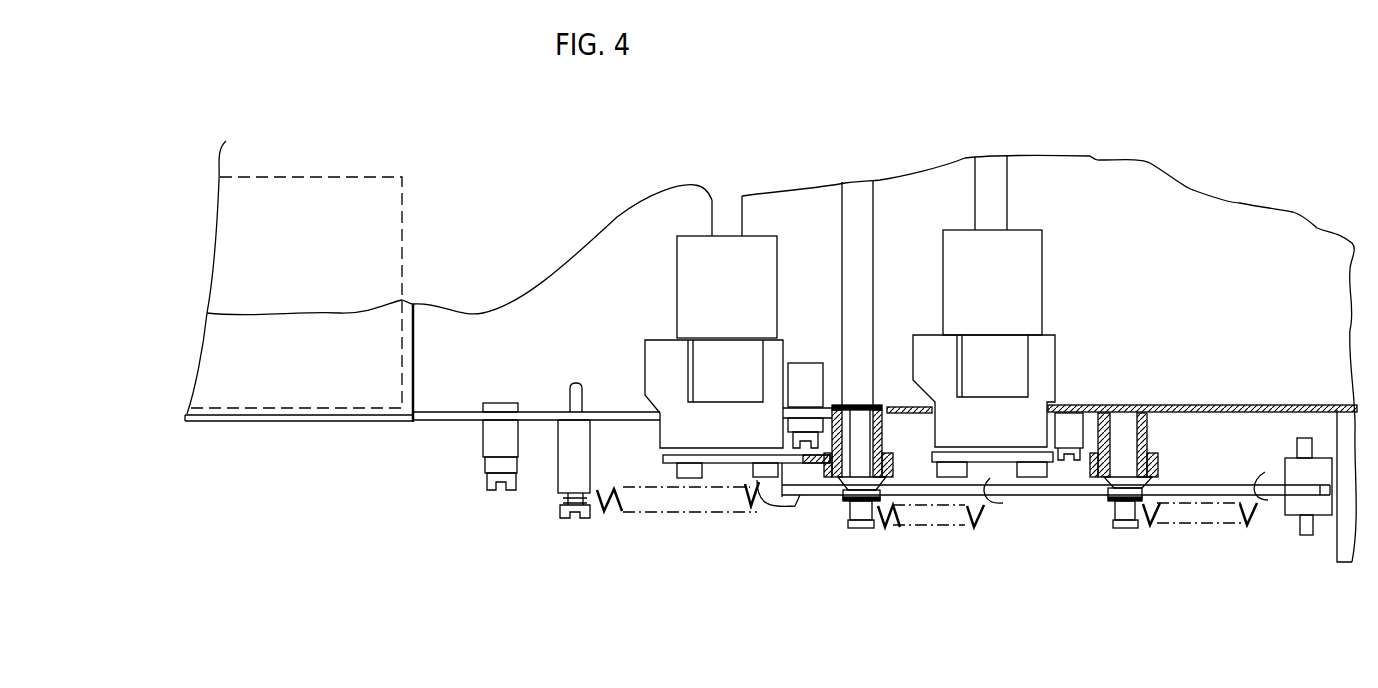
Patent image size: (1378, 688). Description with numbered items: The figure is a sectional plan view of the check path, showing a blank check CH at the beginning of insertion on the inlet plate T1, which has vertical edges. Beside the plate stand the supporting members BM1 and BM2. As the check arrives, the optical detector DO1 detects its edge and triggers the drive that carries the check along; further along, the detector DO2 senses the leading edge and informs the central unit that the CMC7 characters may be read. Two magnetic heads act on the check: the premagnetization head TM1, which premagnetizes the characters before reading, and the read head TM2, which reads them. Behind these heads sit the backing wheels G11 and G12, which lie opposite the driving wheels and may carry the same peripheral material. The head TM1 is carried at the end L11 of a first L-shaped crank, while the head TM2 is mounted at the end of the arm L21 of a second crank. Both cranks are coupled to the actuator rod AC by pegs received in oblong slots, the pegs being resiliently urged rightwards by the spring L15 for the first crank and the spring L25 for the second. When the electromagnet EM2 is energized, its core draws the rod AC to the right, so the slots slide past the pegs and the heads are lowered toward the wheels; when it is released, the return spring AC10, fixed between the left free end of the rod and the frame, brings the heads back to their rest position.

The check CH is at (362, 176).
The inlet plate T1 is at (287, 422).
The first mounting beam BM1 is at (430, 422).
The optical detector DO1 is at (490, 445).
The return spring AC10 is at (604, 510).
The end of L-shaped crank L11 is at (720, 463).
The backing wheel G11 is at (690, 267).
The premagnetization head TM1 is at (713, 373).
The detector DO2 is at (808, 375).
The spring L15 is at (890, 525).
The backing wheel G12 is at (1022, 267).
The read head TM2 is at (1013, 367).
The arm of second crank L21 is at (1007, 457).
The second mounting beam BM2 is at (1180, 405).
The actuator rod AC is at (1222, 487).
The spring L25 is at (1152, 525).
The electromagnet EM2 is at (1352, 535).